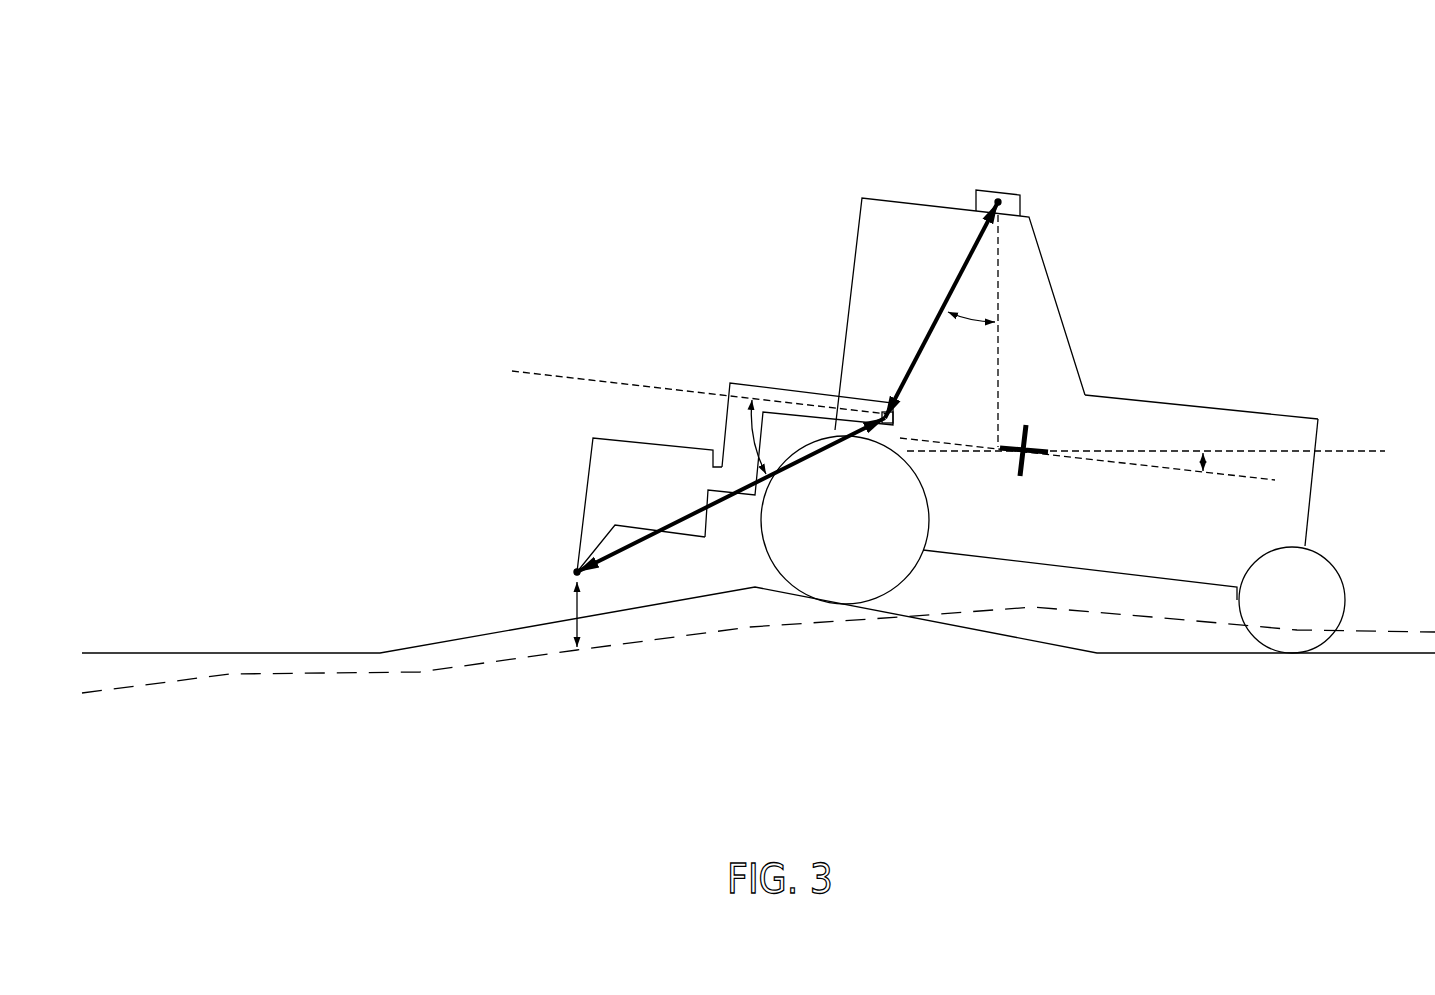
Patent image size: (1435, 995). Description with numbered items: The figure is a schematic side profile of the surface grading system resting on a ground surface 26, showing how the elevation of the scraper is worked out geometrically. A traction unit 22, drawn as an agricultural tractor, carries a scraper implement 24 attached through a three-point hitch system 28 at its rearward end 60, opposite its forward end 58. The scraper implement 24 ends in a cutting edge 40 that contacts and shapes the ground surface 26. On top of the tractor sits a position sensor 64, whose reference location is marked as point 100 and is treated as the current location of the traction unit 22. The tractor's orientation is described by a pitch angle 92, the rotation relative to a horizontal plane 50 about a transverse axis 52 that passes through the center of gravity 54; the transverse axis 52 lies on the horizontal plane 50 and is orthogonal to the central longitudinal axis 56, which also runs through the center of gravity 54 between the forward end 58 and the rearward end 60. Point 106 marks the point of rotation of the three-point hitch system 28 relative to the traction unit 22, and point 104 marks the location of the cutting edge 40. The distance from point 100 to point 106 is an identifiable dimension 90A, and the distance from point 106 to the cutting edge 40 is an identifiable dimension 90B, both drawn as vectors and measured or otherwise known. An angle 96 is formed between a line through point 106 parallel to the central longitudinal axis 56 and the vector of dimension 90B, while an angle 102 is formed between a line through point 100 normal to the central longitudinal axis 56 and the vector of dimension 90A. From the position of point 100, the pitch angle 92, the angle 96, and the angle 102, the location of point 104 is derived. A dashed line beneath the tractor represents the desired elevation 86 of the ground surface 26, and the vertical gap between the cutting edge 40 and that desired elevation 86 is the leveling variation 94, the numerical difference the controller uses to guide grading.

The traction unit 22 is at (1165, 400).
The scraper implement 24 is at (625, 440).
The ground surface 26 is at (1389, 653).
The three-point hitch system 28 is at (757, 384).
The cutting edge 40 is at (576, 574).
The horizontal plane 50 is at (1245, 450).
The transverse axis 52 is at (1027, 428).
The center of gravity 54 is at (1027, 455).
The central longitudinal axis 56 is at (1170, 468).
The forward end 58 is at (1306, 505).
The rearward end 60 is at (843, 368).
The position sensor 64 is at (984, 189).
The desired elevation 86 is at (306, 674).
The identifiable dimension 90A is at (957, 280).
The identifiable dimension 90B is at (685, 517).
The pitch angle 92 is at (1206, 462).
The leveling variation 94 is at (583, 627).
The angle 96 is at (753, 443).
The reference location of the position sensor 100 is at (1000, 189).
The angle 102 is at (964, 317).
The location of the cutting edge 104 is at (576, 570).
The point of rotation 106 is at (895, 418).